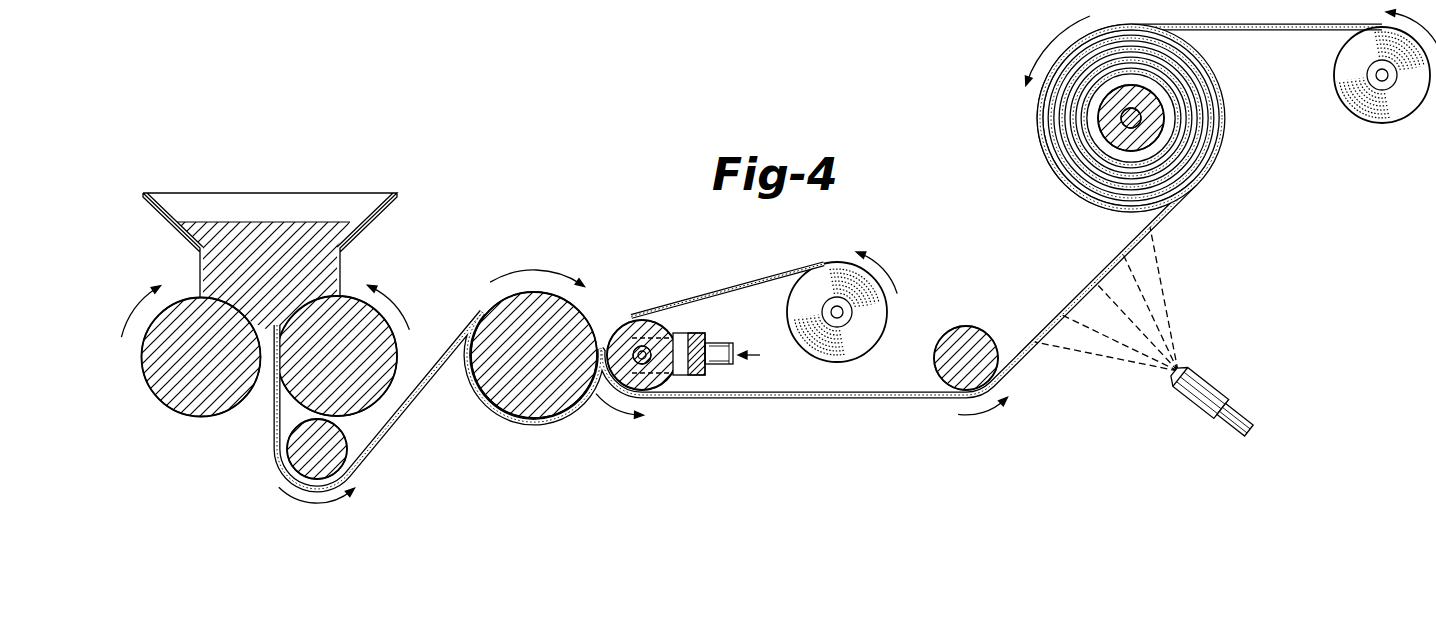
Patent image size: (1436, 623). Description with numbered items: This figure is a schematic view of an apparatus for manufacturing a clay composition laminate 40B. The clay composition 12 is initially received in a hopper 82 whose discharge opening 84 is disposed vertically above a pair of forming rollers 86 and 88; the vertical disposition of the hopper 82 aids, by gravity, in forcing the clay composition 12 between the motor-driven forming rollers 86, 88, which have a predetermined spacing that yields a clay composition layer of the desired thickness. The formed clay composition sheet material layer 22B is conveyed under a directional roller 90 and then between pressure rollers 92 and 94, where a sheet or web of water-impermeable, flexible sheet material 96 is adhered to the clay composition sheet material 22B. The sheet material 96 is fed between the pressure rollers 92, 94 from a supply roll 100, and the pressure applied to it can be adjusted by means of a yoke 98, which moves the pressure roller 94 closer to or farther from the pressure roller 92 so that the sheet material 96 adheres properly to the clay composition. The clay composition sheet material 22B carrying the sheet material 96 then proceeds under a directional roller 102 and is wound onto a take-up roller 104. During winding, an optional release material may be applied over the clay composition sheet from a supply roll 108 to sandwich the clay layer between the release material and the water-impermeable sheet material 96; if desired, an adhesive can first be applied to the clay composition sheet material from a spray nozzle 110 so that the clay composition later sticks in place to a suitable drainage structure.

The clay composition 12 is at (258, 232).
The clay composition sheet material layer 22B is at (466, 333).
The clay composition laminate 40B is at (1230, 142).
The hopper 82 is at (200, 262).
The discharge opening 84 is at (280, 338).
The forming roller 86 is at (397, 352).
The forming roller 88 is at (190, 410).
The directional roller 90 is at (292, 453).
The pressure roller 92 is at (548, 403).
The pressure roller 94 is at (658, 390).
The water-impermeable flexible sheet material 96 is at (738, 290).
The yoke 98 is at (705, 340).
The supply roll 100 is at (882, 312).
The directional roller 102 is at (978, 336).
The take-up roller 104 is at (1106, 118).
The supply roll 108 is at (1380, 118).
The spray nozzle 110 is at (1228, 392).